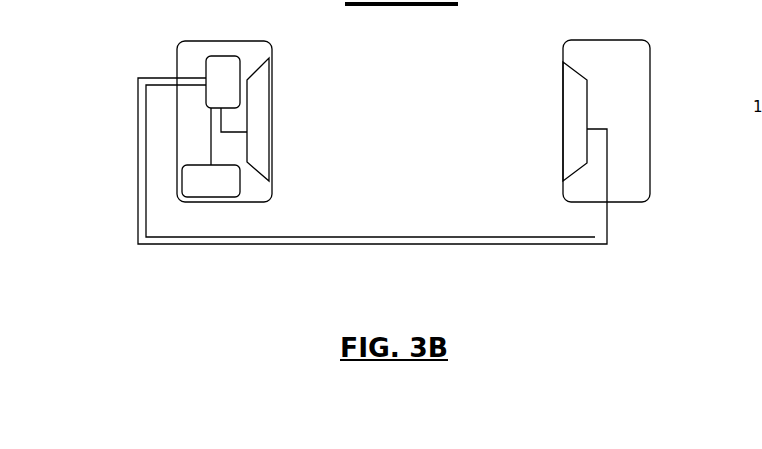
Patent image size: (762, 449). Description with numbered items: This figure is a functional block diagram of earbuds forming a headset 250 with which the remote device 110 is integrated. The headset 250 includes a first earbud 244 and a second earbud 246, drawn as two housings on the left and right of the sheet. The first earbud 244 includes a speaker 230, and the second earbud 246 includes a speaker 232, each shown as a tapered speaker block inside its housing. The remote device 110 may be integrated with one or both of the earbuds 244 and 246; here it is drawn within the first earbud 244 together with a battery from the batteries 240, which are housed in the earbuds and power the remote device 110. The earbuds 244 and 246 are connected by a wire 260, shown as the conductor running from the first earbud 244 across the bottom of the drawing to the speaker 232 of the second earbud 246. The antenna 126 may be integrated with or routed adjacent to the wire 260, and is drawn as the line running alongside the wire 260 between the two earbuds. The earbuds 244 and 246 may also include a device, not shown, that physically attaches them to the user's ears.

The remote device 110 is at (215, 56).
The speaker 230 is at (248, 78).
The batteries 240 is at (240, 188).
The first earbud 244 is at (322, 113).
The antenna 126 is at (378, 237).
The wire 260 is at (415, 244).
The second earbud 246 is at (660, 102).
The speaker 232 is at (565, 62).
The headset 250 is at (571, 283).